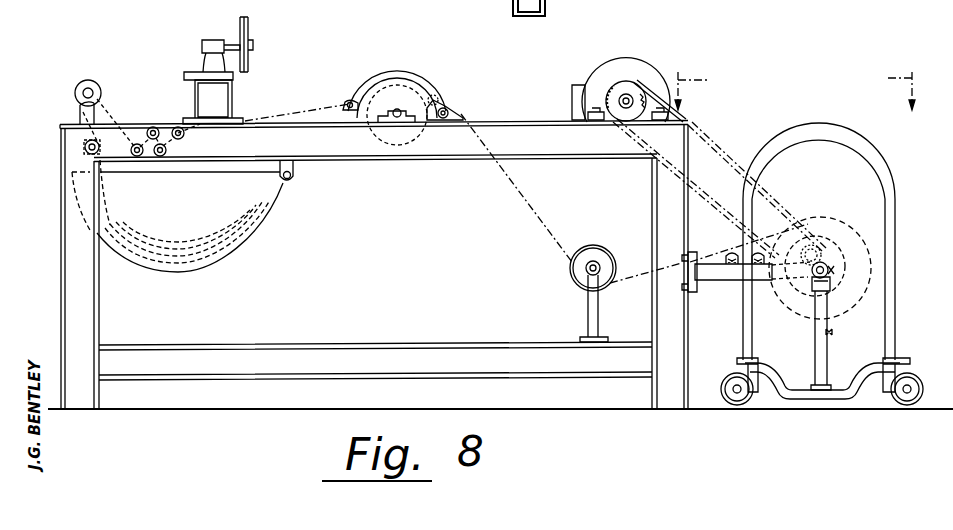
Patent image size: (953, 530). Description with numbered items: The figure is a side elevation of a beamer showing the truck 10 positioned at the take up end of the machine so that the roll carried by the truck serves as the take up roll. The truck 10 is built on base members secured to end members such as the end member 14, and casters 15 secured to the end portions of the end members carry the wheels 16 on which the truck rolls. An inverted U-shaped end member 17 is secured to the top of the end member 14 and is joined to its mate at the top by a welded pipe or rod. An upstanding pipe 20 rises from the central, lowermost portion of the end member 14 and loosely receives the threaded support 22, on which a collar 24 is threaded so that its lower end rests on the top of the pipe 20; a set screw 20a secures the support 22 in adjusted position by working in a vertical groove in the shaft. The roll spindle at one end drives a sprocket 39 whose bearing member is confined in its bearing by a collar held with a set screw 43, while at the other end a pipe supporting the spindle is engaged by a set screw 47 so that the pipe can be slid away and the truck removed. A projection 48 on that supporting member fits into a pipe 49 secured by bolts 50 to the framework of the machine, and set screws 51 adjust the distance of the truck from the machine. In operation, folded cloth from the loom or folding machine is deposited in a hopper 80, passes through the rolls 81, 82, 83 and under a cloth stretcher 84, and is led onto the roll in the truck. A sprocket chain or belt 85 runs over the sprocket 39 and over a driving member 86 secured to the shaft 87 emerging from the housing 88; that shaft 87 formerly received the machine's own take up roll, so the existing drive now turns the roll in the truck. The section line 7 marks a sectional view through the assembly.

The section line 7- 7 is at (795, 91).
The truck 10 is at (893, 232).
The end member 14 is at (850, 370).
The caster 15 is at (751, 372).
The wheel 16 is at (722, 378).
The inverted U-shaped end member 17 is at (894, 262).
The upstanding pipe 20 is at (814, 352).
The set screw 20a is at (833, 332).
The threaded support 22 is at (813, 282).
The collar 24 is at (820, 268).
The sprocket 39 is at (812, 246).
The set screw 43 is at (822, 256).
The set screw 47 is at (830, 262).
The projection 48 is at (786, 276).
The pipe 49 is at (718, 280).
The bolt 50 is at (696, 258).
The set screw 51 is at (733, 252).
The hopper 80 is at (250, 258).
The roll 81 is at (92, 81).
The roll 82 is at (138, 143).
The roll 83 is at (396, 92).
The cloth stretcher 84 is at (591, 246).
The sprocket chain or belt 85 is at (738, 172).
The driving member 86 is at (642, 96).
The shaft 87 is at (631, 100).
The housing 88 is at (628, 42).